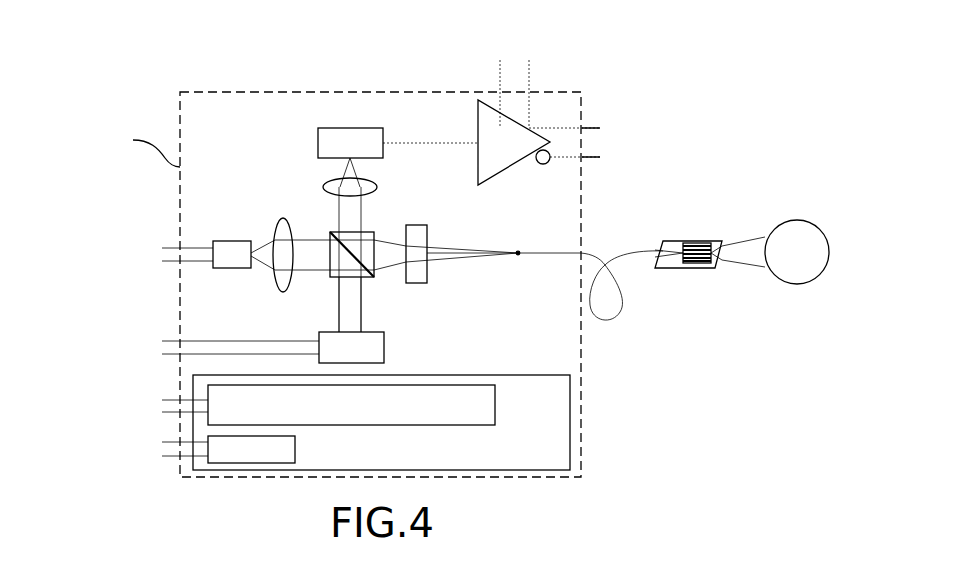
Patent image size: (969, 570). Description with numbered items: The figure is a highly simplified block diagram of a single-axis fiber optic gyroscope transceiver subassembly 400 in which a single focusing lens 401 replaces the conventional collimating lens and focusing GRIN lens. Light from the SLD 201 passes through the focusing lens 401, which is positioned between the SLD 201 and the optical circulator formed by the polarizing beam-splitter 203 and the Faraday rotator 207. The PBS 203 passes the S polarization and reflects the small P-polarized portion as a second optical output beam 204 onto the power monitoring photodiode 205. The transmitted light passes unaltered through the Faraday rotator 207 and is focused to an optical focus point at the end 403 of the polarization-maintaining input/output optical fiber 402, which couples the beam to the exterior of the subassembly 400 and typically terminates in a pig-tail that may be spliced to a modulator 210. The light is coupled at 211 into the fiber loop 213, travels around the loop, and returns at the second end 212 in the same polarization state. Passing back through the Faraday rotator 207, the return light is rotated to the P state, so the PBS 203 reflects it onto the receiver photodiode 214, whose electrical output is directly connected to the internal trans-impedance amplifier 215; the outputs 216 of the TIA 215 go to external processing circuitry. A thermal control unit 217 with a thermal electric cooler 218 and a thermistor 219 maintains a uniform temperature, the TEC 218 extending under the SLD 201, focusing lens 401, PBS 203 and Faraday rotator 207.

The single-axis FOG transceiver subassembly 400 is at (280, 83).
The SLD 201 is at (232, 241).
The focusing lens 401 is at (278, 220).
The polarizing beam-splitter 203 is at (347, 246).
The optical output beam 204 is at (340, 297).
The power monitoring photodiode 205 is at (385, 347).
The Faraday rotator 207 is at (427, 230).
The receiver photodiode 214 is at (350, 128).
The trans-impedance amplifier 215 is at (478, 118).
The outputs 216 is at (593, 128).
The input/output optical fiber 402 is at (538, 253).
The end of the input/output optical fiber 403 is at (517, 257).
The modulator 210 is at (693, 241).
The coupling point into the fiber 211 is at (743, 242).
The second end of the fiber loop 212 is at (741, 266).
The fiber loop 213 is at (789, 221).
The thermal control unit 217 is at (572, 422).
The thermal electric cooler 218 is at (340, 426).
The thermistor 219 is at (295, 450).